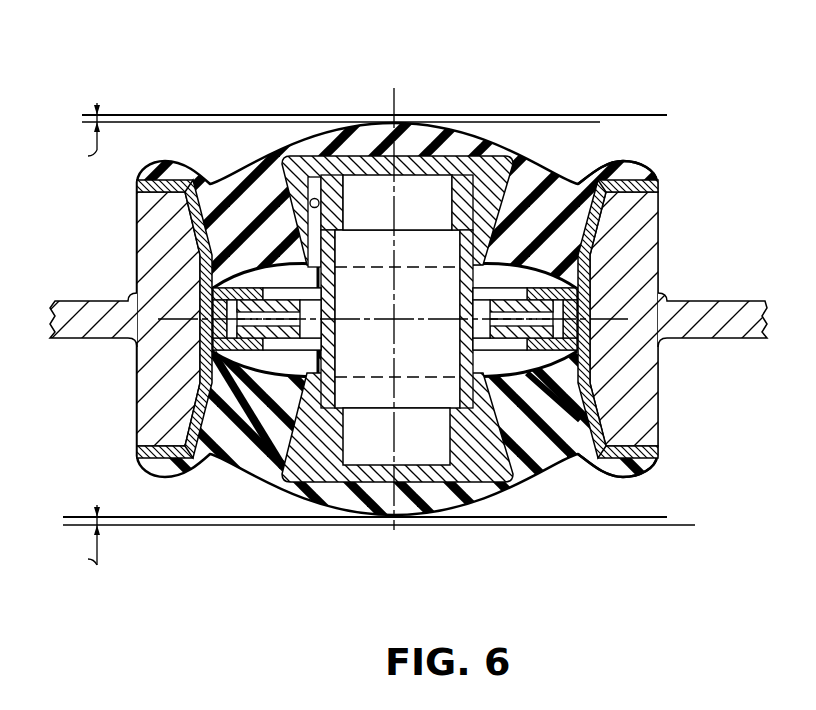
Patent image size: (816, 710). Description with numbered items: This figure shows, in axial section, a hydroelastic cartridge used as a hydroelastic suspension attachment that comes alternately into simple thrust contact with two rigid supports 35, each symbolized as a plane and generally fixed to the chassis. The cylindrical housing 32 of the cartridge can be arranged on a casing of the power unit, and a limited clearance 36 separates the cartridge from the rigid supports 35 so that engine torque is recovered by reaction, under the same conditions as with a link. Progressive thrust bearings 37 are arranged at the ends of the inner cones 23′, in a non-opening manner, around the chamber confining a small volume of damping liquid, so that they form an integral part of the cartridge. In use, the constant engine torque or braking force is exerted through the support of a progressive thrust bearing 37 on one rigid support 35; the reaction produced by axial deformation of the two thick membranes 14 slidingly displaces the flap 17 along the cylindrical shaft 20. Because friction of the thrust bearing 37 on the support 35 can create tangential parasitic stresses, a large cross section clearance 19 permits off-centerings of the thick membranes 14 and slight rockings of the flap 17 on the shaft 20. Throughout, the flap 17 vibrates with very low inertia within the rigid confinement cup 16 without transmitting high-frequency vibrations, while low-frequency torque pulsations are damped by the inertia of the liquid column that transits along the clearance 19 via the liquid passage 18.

The thick membrane 14 is at (570, 200).
The rigid confinement cup 16 is at (213, 293).
The flap 17 is at (472, 337).
The liquid passage 18 is at (573, 414).
The large cross section clearance 19 is at (590, 298).
The cylindrical shaft 20 is at (330, 281).
The inner cone 23′ is at (284, 152).
The cylindrical housing 32 is at (200, 375).
The rigid support 35 is at (553, 115).
The limited clearance 36 is at (76, 336).
The progressive thrust bearing 37 is at (381, 137).